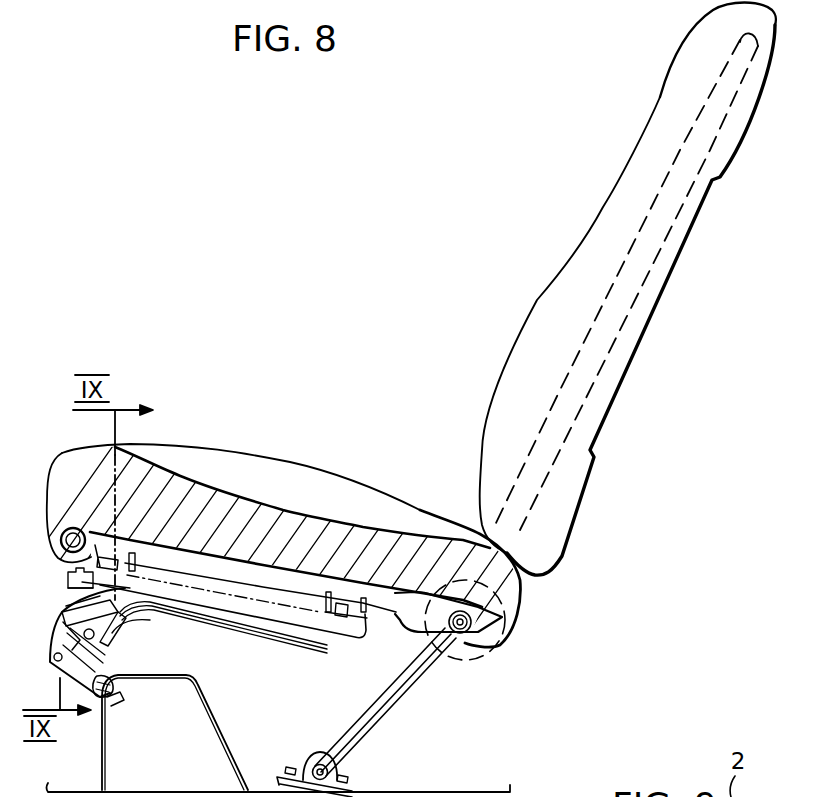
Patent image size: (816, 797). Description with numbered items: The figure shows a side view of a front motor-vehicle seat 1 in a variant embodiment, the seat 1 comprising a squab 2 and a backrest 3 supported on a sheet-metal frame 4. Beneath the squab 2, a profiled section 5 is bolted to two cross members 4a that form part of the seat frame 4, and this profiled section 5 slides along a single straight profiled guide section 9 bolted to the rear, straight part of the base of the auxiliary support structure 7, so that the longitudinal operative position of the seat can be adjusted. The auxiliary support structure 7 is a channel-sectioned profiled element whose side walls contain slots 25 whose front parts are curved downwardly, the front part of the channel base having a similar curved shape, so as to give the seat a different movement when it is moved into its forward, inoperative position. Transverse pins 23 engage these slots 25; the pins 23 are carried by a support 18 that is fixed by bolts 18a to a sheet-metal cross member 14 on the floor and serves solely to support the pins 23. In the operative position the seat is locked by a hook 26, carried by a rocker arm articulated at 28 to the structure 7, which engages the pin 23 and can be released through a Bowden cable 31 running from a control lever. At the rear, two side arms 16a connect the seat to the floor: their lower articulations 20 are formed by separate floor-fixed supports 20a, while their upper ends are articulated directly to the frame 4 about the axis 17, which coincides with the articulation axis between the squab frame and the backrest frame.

The seat 1 is at (478, 520).
The squab 2 is at (163, 500).
The backrest 3 is at (565, 283).
The sheet-metal frame 4 is at (57, 473).
The cross members 4a is at (92, 534).
The profiled section 5 is at (337, 640).
The auxiliary support structure 7 is at (64, 607).
The profiled guide section 9 is at (66, 578).
The cross member 14 is at (222, 720).
The side arms 16a is at (394, 712).
The articulation axis 17 is at (477, 630).
The support 18 is at (112, 683).
The bolts 18a is at (107, 698).
The articulations 20 is at (319, 762).
The supports 20a is at (353, 770).
The transverse pins 23 is at (47, 660).
The slots 25 is at (64, 626).
The hook 26 is at (117, 647).
The articulation of rocker arm 28 is at (130, 625).
The Bowden cable 31 is at (224, 626).